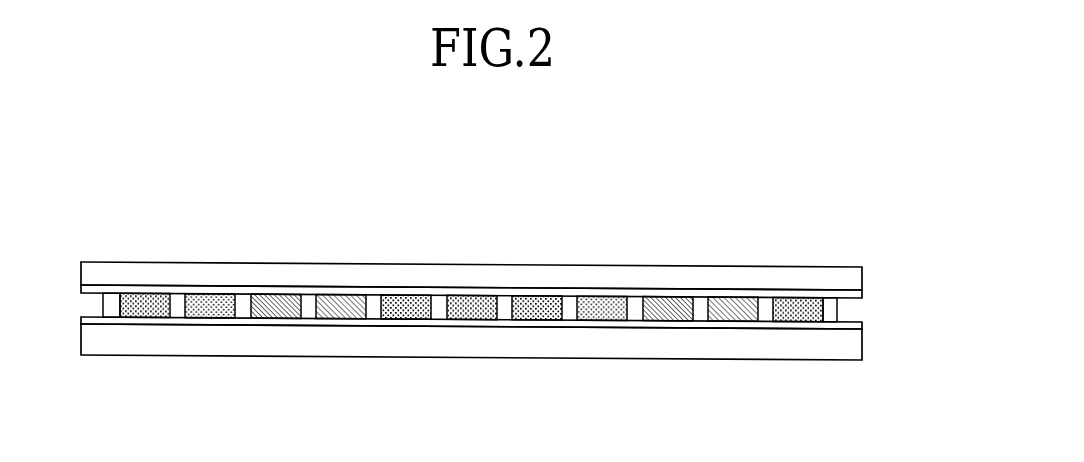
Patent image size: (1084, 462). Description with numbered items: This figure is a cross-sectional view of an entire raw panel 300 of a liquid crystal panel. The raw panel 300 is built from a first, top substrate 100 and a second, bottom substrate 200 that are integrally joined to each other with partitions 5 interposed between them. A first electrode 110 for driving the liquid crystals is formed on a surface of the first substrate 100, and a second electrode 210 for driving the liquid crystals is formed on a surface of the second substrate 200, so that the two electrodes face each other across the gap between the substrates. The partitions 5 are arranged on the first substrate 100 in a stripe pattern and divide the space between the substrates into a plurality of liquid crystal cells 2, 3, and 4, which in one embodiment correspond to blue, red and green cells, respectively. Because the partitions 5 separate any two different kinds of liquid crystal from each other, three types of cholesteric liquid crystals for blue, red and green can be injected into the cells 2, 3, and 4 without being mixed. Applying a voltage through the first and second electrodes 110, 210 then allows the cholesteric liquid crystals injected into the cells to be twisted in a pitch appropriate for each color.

The first substrate 100 is at (830, 275).
The first electrode 110 is at (848, 292).
The second substrate 200 is at (848, 348).
The second electrode 210 is at (848, 325).
The raw panel 300 is at (424, 247).
The liquid crystal cell 2 is at (142, 318).
The liquid crystal cell 3 is at (207, 318).
The liquid crystal cell 4 is at (272, 318).
The partitions 5 is at (110, 304).